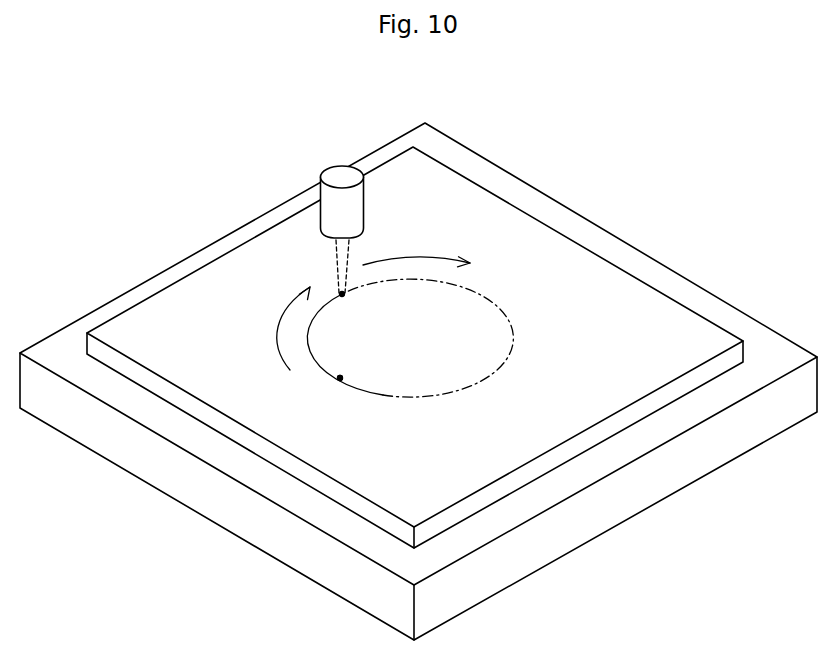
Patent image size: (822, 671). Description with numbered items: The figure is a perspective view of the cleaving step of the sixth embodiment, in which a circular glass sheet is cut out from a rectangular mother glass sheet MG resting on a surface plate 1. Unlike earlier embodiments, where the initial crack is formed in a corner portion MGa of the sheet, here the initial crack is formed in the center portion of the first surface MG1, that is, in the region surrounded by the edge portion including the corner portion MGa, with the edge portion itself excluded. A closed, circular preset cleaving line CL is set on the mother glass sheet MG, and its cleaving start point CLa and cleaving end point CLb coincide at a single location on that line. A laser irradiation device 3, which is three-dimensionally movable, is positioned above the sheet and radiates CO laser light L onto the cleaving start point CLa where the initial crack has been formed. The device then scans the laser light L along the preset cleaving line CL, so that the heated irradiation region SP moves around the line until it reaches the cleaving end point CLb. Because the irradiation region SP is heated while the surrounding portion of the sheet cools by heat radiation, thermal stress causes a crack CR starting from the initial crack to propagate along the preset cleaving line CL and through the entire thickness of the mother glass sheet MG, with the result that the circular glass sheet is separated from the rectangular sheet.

The surface plate 1 is at (665, 470).
The laser irradiation device 3 is at (338, 172).
The laser light L is at (350, 258).
The mother glass sheet MG is at (385, 373).
The first surface MG1 is at (162, 317).
The corner portion MGa is at (455, 172).
The preset cleaving line CL is at (505, 306).
The irradiation region SP is at (343, 296).
The cleaving start point CLa is at (341, 381).
The cleaving end point CLb is at (350, 421).
The crack CR is at (330, 372).